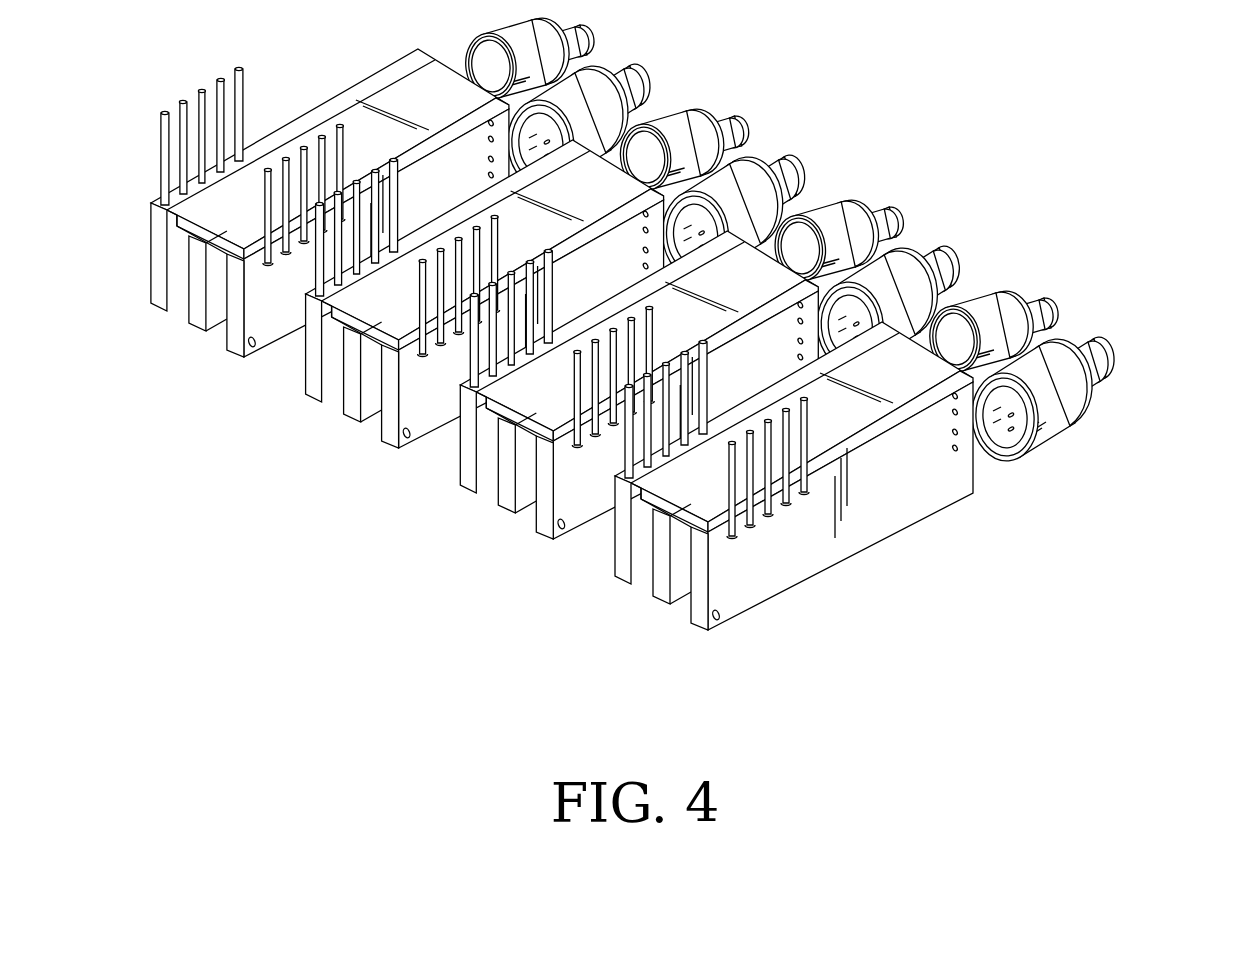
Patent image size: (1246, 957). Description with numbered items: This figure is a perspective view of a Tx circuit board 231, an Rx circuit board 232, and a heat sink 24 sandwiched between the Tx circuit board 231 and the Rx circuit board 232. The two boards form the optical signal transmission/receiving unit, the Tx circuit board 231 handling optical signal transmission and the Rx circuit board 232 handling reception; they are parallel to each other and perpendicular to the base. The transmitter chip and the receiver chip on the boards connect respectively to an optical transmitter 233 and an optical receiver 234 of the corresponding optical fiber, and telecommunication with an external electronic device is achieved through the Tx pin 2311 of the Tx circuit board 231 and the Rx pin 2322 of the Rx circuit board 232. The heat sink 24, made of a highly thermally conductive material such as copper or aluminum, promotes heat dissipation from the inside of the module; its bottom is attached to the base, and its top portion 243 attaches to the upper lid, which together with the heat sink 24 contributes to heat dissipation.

The heat sink 24 is at (813, 417).
The Tx circuit board 231 is at (622, 552).
The Tx pin 2311 is at (615, 462).
The Rx circuit board 232 is at (743, 578).
The Rx pin 2322 is at (817, 422).
The optical transmitter 233 is at (987, 316).
The optical receiver 234 is at (1053, 395).
The top portion 243 is at (902, 368).